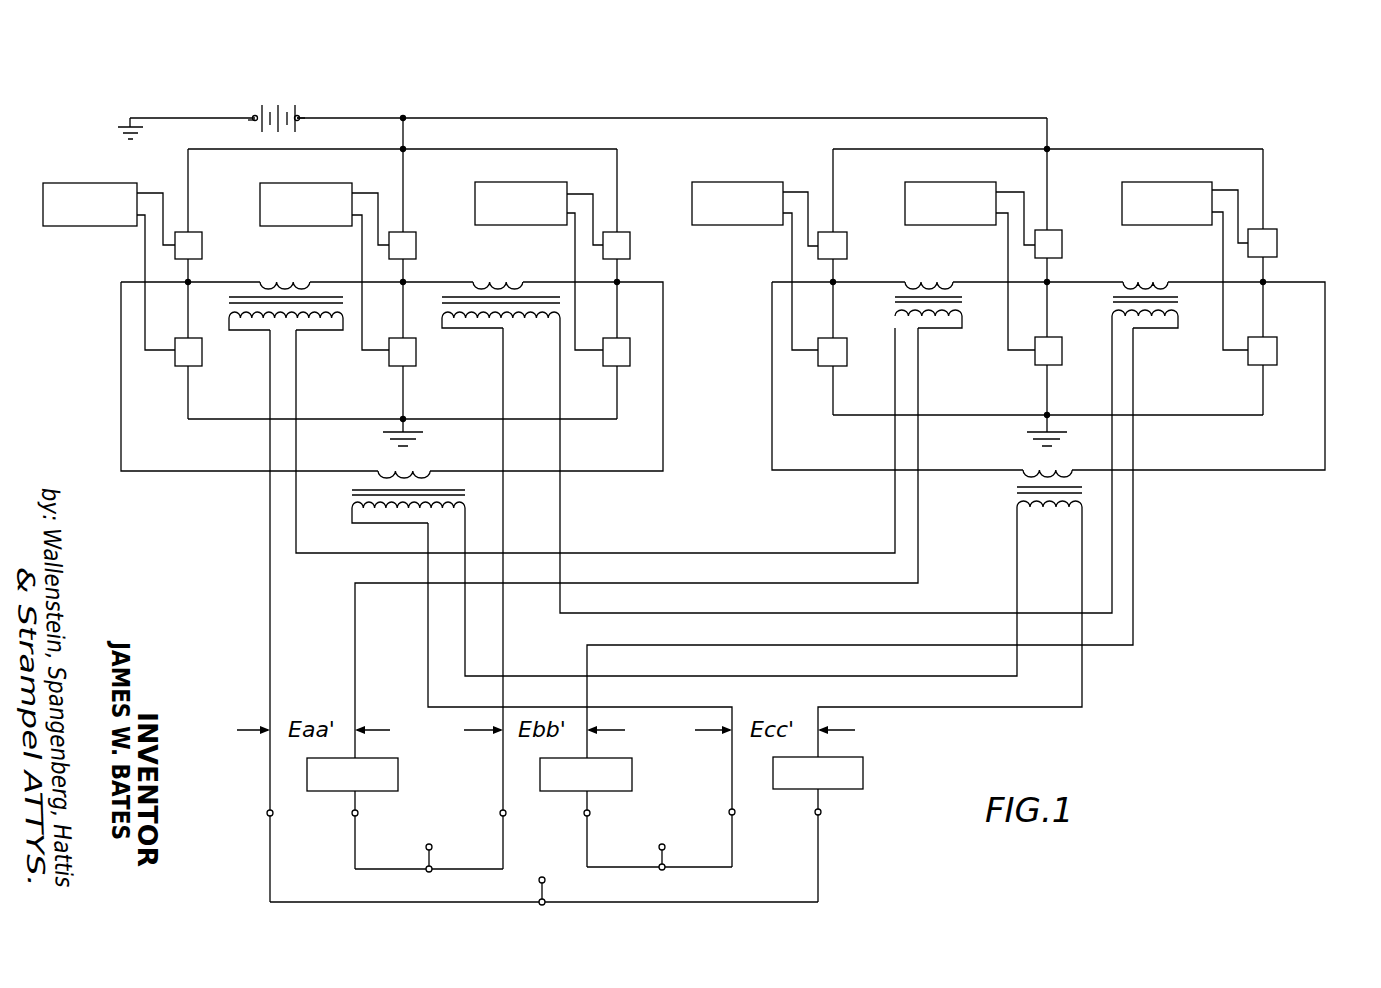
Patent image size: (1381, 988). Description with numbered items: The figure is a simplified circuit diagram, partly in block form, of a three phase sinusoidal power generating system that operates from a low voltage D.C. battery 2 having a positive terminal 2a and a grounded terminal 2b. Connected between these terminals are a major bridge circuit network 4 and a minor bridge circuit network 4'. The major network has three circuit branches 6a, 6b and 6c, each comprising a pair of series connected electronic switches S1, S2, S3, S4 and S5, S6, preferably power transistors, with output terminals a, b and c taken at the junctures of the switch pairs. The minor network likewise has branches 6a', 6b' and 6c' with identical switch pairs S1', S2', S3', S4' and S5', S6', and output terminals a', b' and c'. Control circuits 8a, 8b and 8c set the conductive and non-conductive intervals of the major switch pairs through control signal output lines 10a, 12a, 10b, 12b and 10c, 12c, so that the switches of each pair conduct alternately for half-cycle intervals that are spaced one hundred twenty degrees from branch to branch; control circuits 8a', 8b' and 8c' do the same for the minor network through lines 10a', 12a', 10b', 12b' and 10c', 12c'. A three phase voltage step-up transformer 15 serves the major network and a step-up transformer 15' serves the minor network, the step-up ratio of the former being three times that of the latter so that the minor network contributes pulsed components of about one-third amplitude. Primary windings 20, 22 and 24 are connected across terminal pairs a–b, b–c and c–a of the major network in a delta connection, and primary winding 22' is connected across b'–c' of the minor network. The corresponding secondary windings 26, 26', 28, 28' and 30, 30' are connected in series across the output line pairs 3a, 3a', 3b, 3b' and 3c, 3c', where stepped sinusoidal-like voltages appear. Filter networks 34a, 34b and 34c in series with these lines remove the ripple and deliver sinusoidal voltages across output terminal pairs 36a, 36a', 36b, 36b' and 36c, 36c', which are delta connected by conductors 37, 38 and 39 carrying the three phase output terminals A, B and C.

The battery 2 is at (253, 100).
The positive terminal of battery 2a is at (300, 119).
The grounded terminal of battery 2b is at (248, 120).
The major bridge circuit network 4 is at (584, 261).
The minor bridge circuit network 4' is at (1048, 261).
The circuit branch 6a is at (213, 190).
The circuit branch 6b is at (430, 175).
The circuit branch 6c is at (644, 190).
The circuit branch 6a' is at (861, 190).
The circuit branch 6b' is at (1076, 174).
The circuit branch 6c' is at (1292, 187).
The control circuit 8a is at (90, 188).
The control circuit 8b is at (306, 188).
The control circuit 8c is at (521, 188).
The control circuit 8a' is at (737, 188).
The control circuit 8b' is at (950, 188).
The control circuit 8c' is at (1167, 188).
The control signal output line 10a is at (153, 198).
The control signal output line 10b is at (372, 198).
The control signal output line 10c is at (586, 198).
The control signal output line 10a' is at (800, 197).
The control signal output line 10b' is at (1018, 197).
The control signal output line 10c' is at (1234, 196).
The control signal output line 12a is at (134, 282).
The control signal output line 12b is at (351, 282).
The control signal output line 12c is at (563, 281).
The control signal output line 12a' is at (775, 281).
The control signal output line 12b' is at (997, 281).
The control signal output line 12c' is at (1211, 281).
The three phase voltage step-up transformer 15 is at (286, 268).
The three phase voltage step-up transformer 15' is at (928, 268).
The primary winding 20 is at (288, 276).
The primary winding 22 is at (501, 271).
The primary winding 24 is at (410, 469).
The secondary winding 26 is at (286, 342).
The secondary winding 28 is at (501, 342).
The secondary winding 30 is at (408, 528).
The primary winding 22' is at (1145, 270).
The secondary winding 26' is at (931, 327).
The secondary winding 28' is at (1147, 341).
The secondary winding 30' is at (1049, 526).
The output line 3a is at (245, 616).
The output line 3a' is at (607, 598).
The output line 3b is at (521, 598).
The output line 3b' is at (842, 591).
The output line 3c is at (580, 695).
The output line 3c' is at (773, 704).
The filter network 34a is at (398, 778).
The filter network 34b is at (632, 780).
The filter network 34c is at (863, 776).
The output terminal 36a is at (241, 827).
The output terminal 36a' is at (329, 828).
The output terminal 36b is at (480, 832).
The output terminal 36b' is at (562, 830).
The output terminal 36c is at (711, 832).
The output terminal 36c' is at (794, 832).
The conductor 37 is at (385, 872).
The conductor 38 is at (610, 872).
The conductor 39 is at (716, 902).
The output terminal a is at (203, 267).
The output terminal b is at (420, 267).
The output terminal c is at (634, 267).
The output terminal a' is at (852, 267).
The output terminal b' is at (1068, 267).
The output terminal c' is at (1283, 267).
The switch S1 is at (188, 285).
The switch S2 is at (188, 378).
The switch S3 is at (402, 285).
The switch S4 is at (402, 378).
The switch S5 is at (616, 285).
The switch S6 is at (616, 378).
The switch S1' is at (832, 285).
The switch S2' is at (832, 376).
The switch S3' is at (1048, 283).
The switch S4' is at (1048, 376).
The switch S5' is at (1262, 283).
The switch S6' is at (1262, 376).